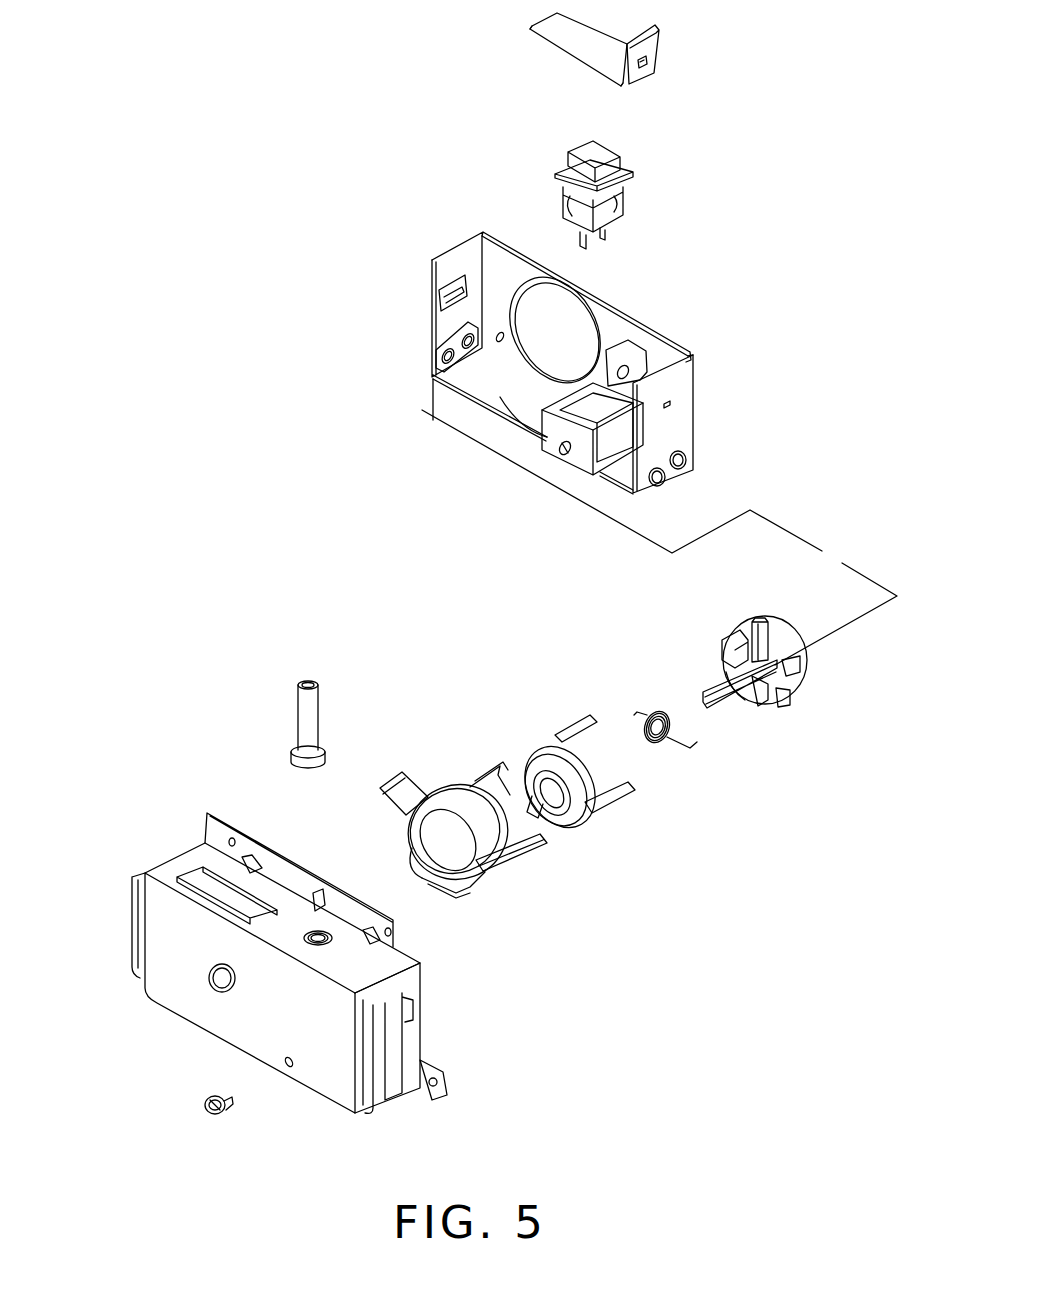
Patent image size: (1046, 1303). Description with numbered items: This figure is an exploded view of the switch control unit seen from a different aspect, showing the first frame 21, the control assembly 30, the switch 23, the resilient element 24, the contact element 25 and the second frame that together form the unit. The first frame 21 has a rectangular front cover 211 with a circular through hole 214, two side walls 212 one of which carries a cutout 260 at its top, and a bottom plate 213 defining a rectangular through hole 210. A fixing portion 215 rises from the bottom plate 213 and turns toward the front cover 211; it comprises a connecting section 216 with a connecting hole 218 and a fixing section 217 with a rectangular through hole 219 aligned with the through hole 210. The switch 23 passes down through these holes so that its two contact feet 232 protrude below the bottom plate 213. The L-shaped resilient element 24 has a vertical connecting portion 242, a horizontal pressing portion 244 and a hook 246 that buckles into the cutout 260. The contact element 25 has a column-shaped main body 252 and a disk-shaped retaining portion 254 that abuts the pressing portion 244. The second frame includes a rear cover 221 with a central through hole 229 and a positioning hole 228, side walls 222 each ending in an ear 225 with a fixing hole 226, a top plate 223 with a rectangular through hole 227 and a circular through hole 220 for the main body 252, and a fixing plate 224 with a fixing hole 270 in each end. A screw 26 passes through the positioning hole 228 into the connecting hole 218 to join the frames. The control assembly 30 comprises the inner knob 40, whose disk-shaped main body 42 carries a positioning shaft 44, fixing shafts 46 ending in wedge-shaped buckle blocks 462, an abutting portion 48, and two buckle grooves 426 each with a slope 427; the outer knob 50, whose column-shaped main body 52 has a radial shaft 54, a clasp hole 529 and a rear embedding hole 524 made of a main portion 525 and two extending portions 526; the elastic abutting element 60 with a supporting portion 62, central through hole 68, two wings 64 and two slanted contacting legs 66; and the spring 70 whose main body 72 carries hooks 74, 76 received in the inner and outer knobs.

The first frame 21 is at (628, 425).
The rectangular through hole 210 is at (652, 474).
The front cover 211 is at (650, 355).
The side walls 212 is at (672, 438).
The bottom plate 213 is at (523, 467).
The circular through hole 214 is at (556, 302).
The fixing portion 215 is at (659, 522).
The connecting section 216 is at (547, 421).
The fixing section 217 is at (500, 397).
The connecting hole 218 is at (566, 455).
The rectangular through hole 219 is at (606, 400).
The cutout 260 is at (687, 360).
The switch 23 is at (624, 183).
The contact feet 232 is at (604, 228).
The resilient element 24 is at (610, 61).
The connecting portion 242 is at (655, 52).
The pressing portion 244 is at (556, 32).
The hook 246 is at (660, 33).
The contact element 25 is at (245, 724).
The main body 252 is at (305, 708).
The retaining portion 254 is at (293, 750).
The screw 26 is at (207, 1112).
The control assembly 30 is at (622, 791).
The inner knob 40 is at (773, 662).
The main body 42 is at (776, 630).
The buckle grooves 426 is at (788, 705).
The slope 427 is at (741, 637).
The positioning shaft 44 is at (717, 703).
The fixing shafts 46 is at (796, 672).
The buckle block 462 is at (760, 706).
The abutting portion 48 is at (755, 622).
The outer knob 50 is at (490, 841).
The main body 52 is at (497, 875).
The embedding hole 524 is at (481, 936).
The main portion 525 is at (448, 914).
The extending portions 526 is at (463, 898).
The clasp hole 529 is at (510, 853).
The radial shaft 54 is at (403, 783).
The elastic abutting element 60 is at (580, 749).
The supporting portion 62 is at (573, 813).
The wings 64 is at (630, 797).
The contacting legs 66 is at (537, 790).
The circular through hole 68 is at (560, 800).
The spring 70 is at (677, 703).
The main body 72 is at (657, 747).
The hook 74 is at (643, 712).
The hook 76 is at (694, 748).
The circular through hole 220 is at (320, 930).
The rear cover 221 is at (211, 1001).
The side walls 222 is at (446, 1058).
The top plate 223 is at (240, 903).
The fixing plate 224 is at (250, 856).
The ear 225 is at (478, 1077).
The fixing hole 226 is at (435, 1070).
The rectangular through hole 227 is at (212, 887).
The positioning hole 228 is at (287, 1065).
The through hole 229 is at (223, 993).
The fixing hole 270 is at (255, 806).